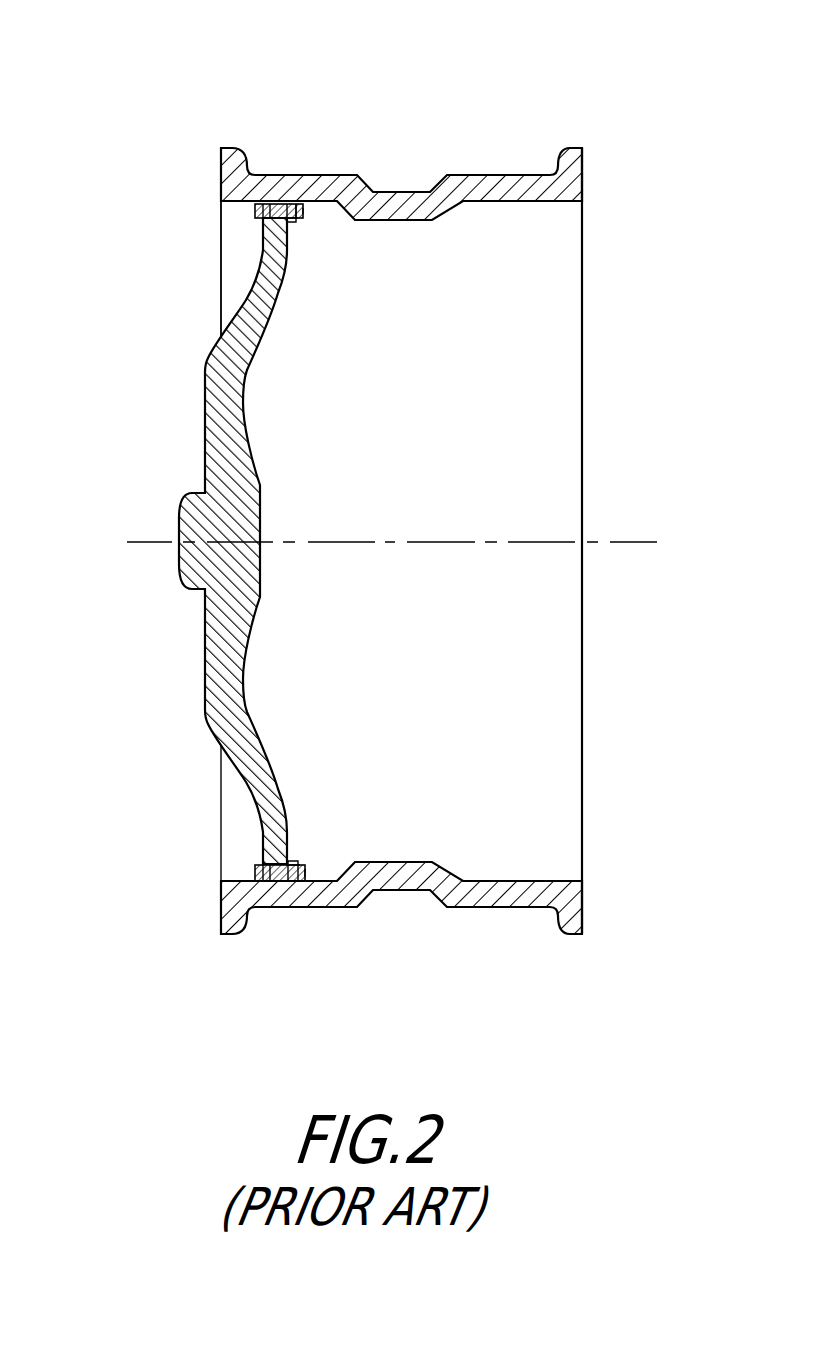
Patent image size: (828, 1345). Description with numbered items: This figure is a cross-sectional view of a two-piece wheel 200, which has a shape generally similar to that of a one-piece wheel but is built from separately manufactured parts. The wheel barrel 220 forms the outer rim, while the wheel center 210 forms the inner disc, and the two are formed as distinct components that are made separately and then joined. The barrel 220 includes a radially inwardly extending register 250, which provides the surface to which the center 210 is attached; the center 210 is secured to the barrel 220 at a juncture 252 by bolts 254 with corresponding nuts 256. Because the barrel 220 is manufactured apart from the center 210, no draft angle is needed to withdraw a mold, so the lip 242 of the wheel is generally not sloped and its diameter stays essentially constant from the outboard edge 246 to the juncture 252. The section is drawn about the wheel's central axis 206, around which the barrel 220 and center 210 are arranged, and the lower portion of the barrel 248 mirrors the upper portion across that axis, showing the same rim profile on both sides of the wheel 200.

The two-piece wheel 200 is at (273, 100).
The wheel barrel 220 is at (318, 155).
The rim drop center 248 is at (423, 907).
The outboard edge 246 is at (221, 290).
The wheel center 210 is at (180, 430).
The axis of rotation 206 is at (625, 541).
The bolts 254 is at (254, 212).
The nuts 256 is at (302, 216).
The register 250 is at (293, 222).
The lip 242 is at (247, 876).
The juncture 252 is at (276, 881).